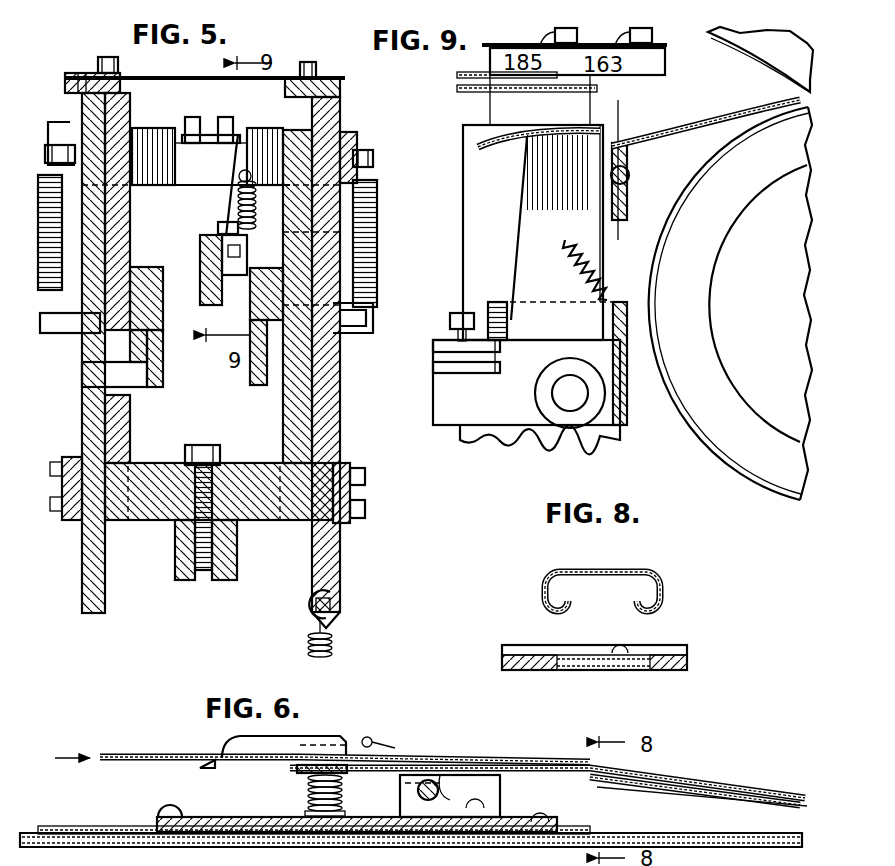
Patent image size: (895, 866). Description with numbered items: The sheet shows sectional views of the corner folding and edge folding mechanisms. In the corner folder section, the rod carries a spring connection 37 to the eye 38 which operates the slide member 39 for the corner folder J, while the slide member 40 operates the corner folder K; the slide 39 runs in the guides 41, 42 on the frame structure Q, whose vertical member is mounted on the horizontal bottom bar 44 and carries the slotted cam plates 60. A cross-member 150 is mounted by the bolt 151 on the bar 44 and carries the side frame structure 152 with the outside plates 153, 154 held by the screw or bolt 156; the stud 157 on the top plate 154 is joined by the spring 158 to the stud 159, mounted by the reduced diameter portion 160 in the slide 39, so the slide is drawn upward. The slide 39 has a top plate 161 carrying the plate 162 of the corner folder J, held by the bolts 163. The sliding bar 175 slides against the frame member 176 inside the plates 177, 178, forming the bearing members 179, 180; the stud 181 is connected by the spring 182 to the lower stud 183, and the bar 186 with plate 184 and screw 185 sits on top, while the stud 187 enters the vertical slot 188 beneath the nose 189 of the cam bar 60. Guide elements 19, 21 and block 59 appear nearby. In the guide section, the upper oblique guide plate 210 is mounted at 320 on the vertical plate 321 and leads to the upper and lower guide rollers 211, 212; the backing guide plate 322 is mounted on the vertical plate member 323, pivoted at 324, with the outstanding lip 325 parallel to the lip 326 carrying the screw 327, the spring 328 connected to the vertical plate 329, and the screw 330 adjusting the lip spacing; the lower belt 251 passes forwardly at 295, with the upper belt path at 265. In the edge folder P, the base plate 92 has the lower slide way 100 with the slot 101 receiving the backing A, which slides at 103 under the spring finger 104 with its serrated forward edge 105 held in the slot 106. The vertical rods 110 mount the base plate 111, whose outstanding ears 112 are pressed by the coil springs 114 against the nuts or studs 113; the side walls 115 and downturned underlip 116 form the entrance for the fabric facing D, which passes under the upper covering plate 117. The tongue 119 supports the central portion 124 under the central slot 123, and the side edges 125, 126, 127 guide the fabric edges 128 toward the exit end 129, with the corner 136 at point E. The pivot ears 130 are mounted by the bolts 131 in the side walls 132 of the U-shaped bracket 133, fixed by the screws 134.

In FIG. 5, the screw 185 is at (105, 58).
In FIG. 5, the plate 184 is at (82, 73).
In FIG. 5, the bearing member 180 is at (66, 78).
In FIG. 5, the plate 177 is at (58, 96).
In FIG. 5, the stud 181 is at (40, 147).
In FIG. 5, the bar 186 is at (104, 104).
In FIG. 5, the frame member 176 is at (124, 216).
In FIG. 9, the frame member 176 is at (478, 237).
In FIG. 5, the spring 182 is at (130, 198).
In FIG. 5, the vertical plate member 323 is at (236, 163).
In FIG. 9, the vertical plate member 323 is at (528, 204).
In FIG. 5, the block 59 is at (145, 265).
In FIG. 5, the swinging cam bar 60 is at (170, 262).
In FIG. 5, the lower stud 183 is at (60, 333).
In FIG. 5, the nose 189 is at (148, 366).
In FIG. 5, the stud 187 is at (130, 378).
In FIG. 5, the vertical slot 188 is at (118, 432).
In FIG. 5, the plate 162 is at (340, 80).
In FIG. 5, the bolts 163 is at (308, 58).
In FIG. 5, the top plate 161 is at (312, 100).
In FIG. 5, the reduced diameter portion 160 is at (335, 360).
In FIG. 5, the guide 42 is at (343, 130).
In FIG. 5, the top plate 154 is at (360, 138).
In FIG. 5, the stud 157 is at (375, 158).
In FIG. 5, the spring 158 is at (378, 218).
In FIG. 5, the stud 159 is at (350, 335).
In FIG. 5, the side frame structure 152 is at (283, 410).
In FIG. 5, the guide 41 is at (338, 465).
In FIG. 5, the outside plate 153 is at (365, 484).
In FIG. 5, the screw or bolt 156 is at (365, 512).
In FIG. 5, the cross-member 150 is at (262, 525).
In FIG. 5, the bearing member 179 is at (66, 462).
In FIG. 5, the plate 178 is at (70, 520).
In FIG. 5, the slide member 40 is at (104, 565).
In FIG. 5, the sliding bar 175 is at (82, 600).
In FIG. 5, the bolt 151 is at (205, 440).
In FIG. 5, the horizontal bottom bar 44 is at (192, 580).
In FIG. 5, the slide member 39 is at (332, 548).
In FIG. 5, the eye 38 is at (308, 592).
In FIG. 5, the spring connection 37 is at (334, 640).
In FIG. 5, the bed plate 21 is at (170, 82).
In FIG. 5, the table 19 is at (232, 82).
In FIG. 9, the guide plate 322 is at (538, 170).
In FIG. 9, the spring 328 is at (572, 254).
In FIG. 9, the screw 330 is at (450, 315).
In FIG. 9, the lip 326 is at (497, 358).
In FIG. 9, the outstanding lip 325 is at (490, 374).
In FIG. 9, the screw 327 is at (467, 372).
In FIG. 9, the pivot 324 is at (568, 400).
In FIG. 9, the vertical plate 329 is at (627, 418).
In FIG. 9, the mounting 320 is at (628, 172).
In FIG. 9, the vertical plate 321 is at (627, 207).
In FIG. 9, the upper oblique guide plate 210 is at (737, 109).
In FIG. 9, the upper guide roller 211 is at (773, 56).
In FIG. 9, the belt path portion 265 is at (727, 55).
In FIG. 9, the lower belt 251 is at (707, 163).
In FIG. 9, the lower guide roller 212 is at (725, 270).
In FIG. 9, the lower belt forward run 295 is at (722, 470).
In FIG. 8, the central slot 123 is at (560, 570).
In FIG. 8, the downturned side edge 125 is at (545, 588).
In FIG. 8, the upturned side edge 127 is at (541, 598).
In FIG. 8, the inturned side edge 126 is at (552, 610).
In FIG. 8, the tongue 119 is at (585, 578).
In FIG. 8, the central portion of ribbon 124 is at (608, 580).
In FIG. 8, the fabric edges 128 is at (562, 612).
In FIG. 8, the upper covering plate 117 is at (645, 572).
In FIG. 6, the upper covering plate 117 is at (395, 760).
In FIG. 8, the slot 101 is at (502, 660).
In FIG. 6, the slot 101 is at (80, 820).
In FIG. 8, the backing slide position 103 is at (565, 670).
In FIG. 6, the backing slide position 103 is at (275, 834).
In FIG. 8, the lower slide way 100 is at (592, 670).
In FIG. 6, the lower slide way 100 is at (115, 848).
In FIG. 8, the spring finger 104 is at (635, 670).
In FIG. 6, the spring finger 104 is at (590, 830).
In FIG. 6, the side walls 115 is at (238, 750).
In FIG. 6, the nuts or studs 113 is at (320, 742).
In FIG. 6, the corner 136 is at (765, 806).
In FIG. 6, the exit end 129 is at (720, 778).
In FIG. 6, the base plate 92 is at (210, 834).
In FIG. 6, the U-shaped bracket 133 is at (535, 842).
In FIG. 6, the downturned underlip 116 is at (205, 768).
In FIG. 6, the base plate 111 is at (245, 772).
In FIG. 6, the vertical rods 110 is at (296, 781).
In FIG. 6, the coil springs 114 is at (297, 790).
In FIG. 6, the outstanding ears 112 is at (345, 782).
In FIG. 6, the pivot ears 130 is at (400, 798).
In FIG. 6, the bolts 131 is at (432, 780).
In FIG. 6, the screws 134 is at (495, 785).
In FIG. 6, the side walls 132 is at (500, 790).
In FIG. 6, the slot 106 is at (515, 826).
In FIG. 6, the serrated forward edge 105 is at (648, 832).
In FIG. 5, the corner folder K is at (142, 77).
In FIG. 5, the corner folder J is at (257, 105).
In FIG. 5, the frame structure Q is at (172, 580).
In FIG. 8, the edge folder P is at (680, 580).
In FIG. 6, the edge folder P is at (675, 776).
In FIG. 6, the fabric facing D is at (128, 756).
In FIG. 6, the backing A is at (28, 832).
In FIG. 6, the point E is at (795, 808).